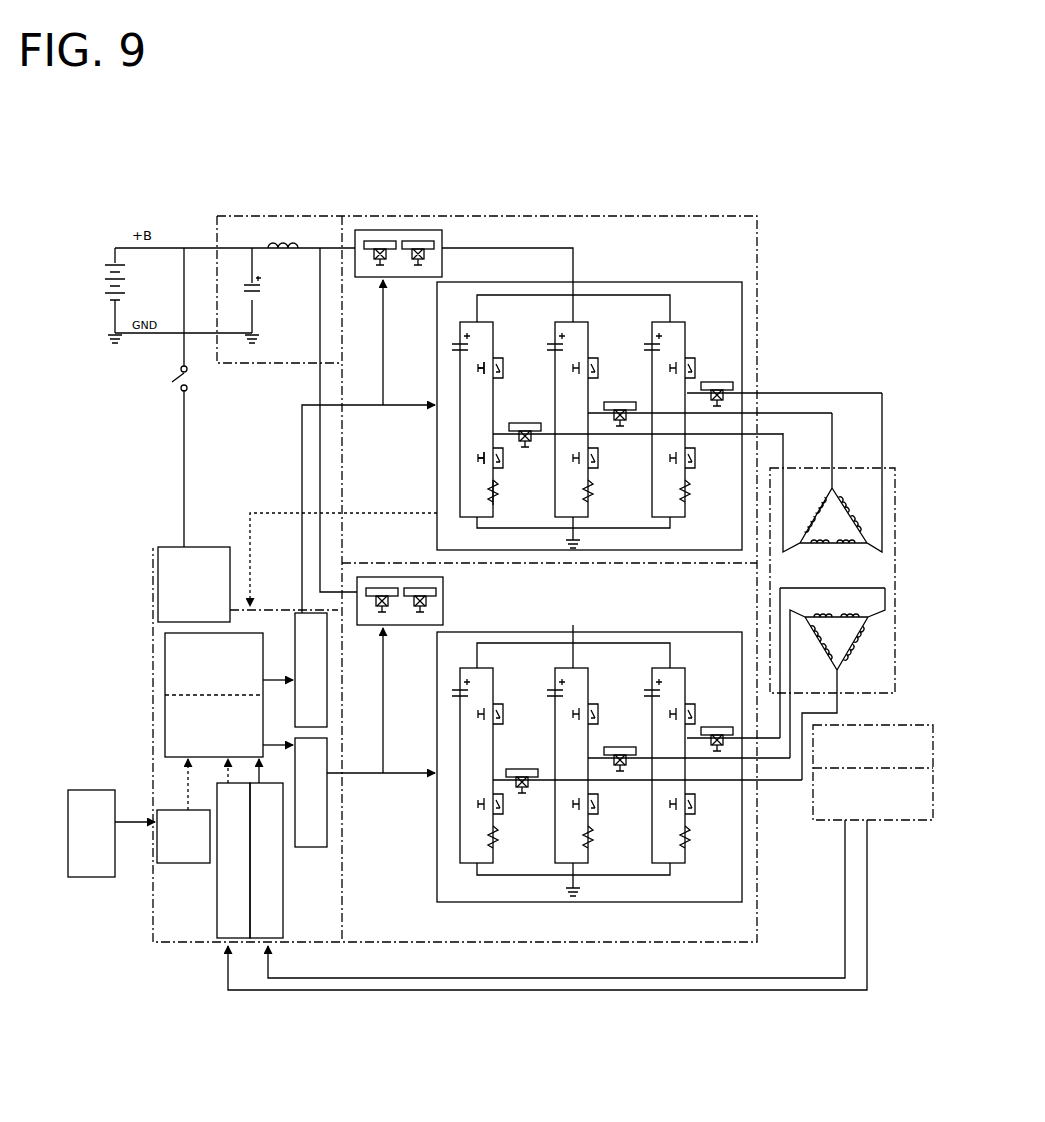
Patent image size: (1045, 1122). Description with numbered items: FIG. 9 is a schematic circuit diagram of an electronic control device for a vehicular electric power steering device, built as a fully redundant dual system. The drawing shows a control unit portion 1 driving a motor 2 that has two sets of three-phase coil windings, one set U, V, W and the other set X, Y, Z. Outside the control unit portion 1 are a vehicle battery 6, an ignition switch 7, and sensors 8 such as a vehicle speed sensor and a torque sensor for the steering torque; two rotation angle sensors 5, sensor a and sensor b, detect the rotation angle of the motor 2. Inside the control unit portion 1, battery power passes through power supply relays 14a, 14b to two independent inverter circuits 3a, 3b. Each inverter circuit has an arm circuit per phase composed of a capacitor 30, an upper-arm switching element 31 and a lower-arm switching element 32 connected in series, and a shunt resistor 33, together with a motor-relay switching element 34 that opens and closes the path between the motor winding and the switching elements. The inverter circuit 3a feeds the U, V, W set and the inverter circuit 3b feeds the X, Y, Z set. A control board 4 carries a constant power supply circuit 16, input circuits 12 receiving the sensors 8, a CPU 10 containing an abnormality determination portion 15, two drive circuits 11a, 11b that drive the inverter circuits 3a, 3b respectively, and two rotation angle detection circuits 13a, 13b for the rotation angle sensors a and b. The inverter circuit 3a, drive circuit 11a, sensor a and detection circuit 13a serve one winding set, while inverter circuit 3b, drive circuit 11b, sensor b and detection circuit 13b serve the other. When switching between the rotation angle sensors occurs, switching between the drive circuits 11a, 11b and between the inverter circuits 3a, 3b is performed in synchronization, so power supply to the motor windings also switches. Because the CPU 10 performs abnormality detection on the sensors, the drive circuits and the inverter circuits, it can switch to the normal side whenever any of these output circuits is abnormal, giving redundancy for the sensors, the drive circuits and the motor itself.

The control unit portion 1 is at (683, 205).
The motor 2 is at (845, 466).
The inverter circuit 3a is at (646, 392).
The inverter circuit 3b is at (637, 902).
The control board 4 is at (153, 622).
The rotation angle sensors 5 is at (833, 822).
The battery 6 is at (112, 262).
The ignition switch 7 is at (178, 385).
The sensors 8 is at (95, 877).
The CPU 10 is at (165, 703).
The drive circuit 11a is at (300, 612).
The drive circuit 11b is at (302, 847).
The input circuits 12 is at (175, 863).
The rotation angle detection circuit 13a is at (215, 940).
The rotation angle detection circuit 13b is at (255, 940).
The first power supply relay 14a is at (378, 230).
The second power supply relay 14b is at (357, 580).
The abnormality determination section 15 is at (165, 742).
The constant power supply circuit 16 is at (172, 547).
The capacitor 30 is at (457, 343).
The switching element 31 is at (500, 362).
The switching element 32 is at (500, 468).
The shunt resistor 33 is at (498, 510).
The motor-relay switching element 34 is at (527, 426).